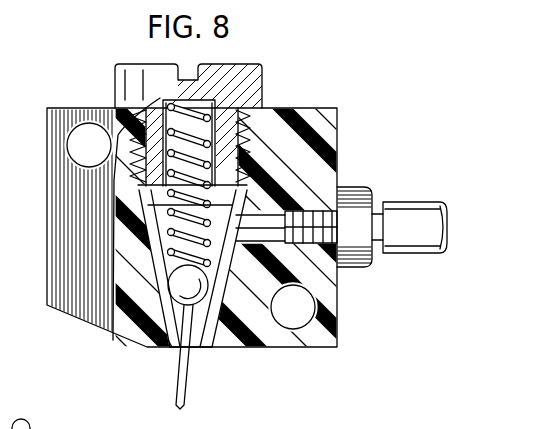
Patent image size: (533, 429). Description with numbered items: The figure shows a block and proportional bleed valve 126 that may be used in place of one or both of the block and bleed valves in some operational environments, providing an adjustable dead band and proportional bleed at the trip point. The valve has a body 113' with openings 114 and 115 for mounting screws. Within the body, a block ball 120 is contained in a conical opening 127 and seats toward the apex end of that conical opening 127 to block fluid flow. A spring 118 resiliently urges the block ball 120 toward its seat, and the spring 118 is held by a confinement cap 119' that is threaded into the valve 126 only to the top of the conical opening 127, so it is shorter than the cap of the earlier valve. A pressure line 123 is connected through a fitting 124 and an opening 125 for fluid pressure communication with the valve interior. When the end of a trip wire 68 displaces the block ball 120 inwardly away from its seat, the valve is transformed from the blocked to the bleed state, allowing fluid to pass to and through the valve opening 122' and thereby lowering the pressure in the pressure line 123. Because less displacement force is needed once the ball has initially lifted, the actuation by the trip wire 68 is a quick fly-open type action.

The trip wire 68 is at (190, 378).
The body 113' is at (230, 222).
The opening 114 is at (68, 149).
The opening 115 is at (292, 318).
The spring 118 is at (166, 238).
The confinement cap 119' is at (177, 105).
The block ball 120 is at (170, 283).
The valve opening 122' is at (220, 360).
The pressure line 123 is at (417, 209).
The fitting 124 is at (379, 201).
The opening 125 is at (272, 240).
The block and proportional bleed valve 126 is at (303, 100).
The conical opening 127 is at (172, 340).